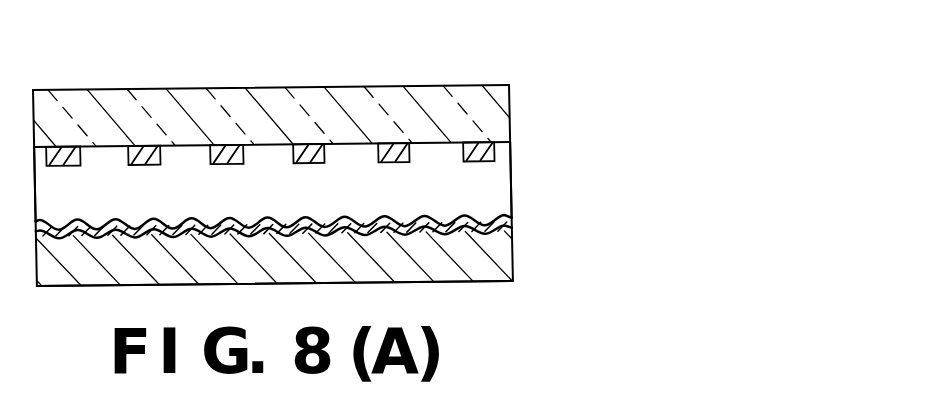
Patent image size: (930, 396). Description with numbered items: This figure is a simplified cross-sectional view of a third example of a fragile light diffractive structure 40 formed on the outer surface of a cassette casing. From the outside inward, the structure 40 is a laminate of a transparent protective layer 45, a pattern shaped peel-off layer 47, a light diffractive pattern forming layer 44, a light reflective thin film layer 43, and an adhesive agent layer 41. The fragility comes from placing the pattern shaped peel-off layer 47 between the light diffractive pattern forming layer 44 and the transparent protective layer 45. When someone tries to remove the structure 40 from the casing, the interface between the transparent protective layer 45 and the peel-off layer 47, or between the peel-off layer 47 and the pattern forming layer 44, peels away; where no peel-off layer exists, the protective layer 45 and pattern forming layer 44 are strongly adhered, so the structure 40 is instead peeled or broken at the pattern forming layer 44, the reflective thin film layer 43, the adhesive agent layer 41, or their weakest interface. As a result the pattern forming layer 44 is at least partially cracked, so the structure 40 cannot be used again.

The fragile light diffractive structure 40 is at (447, 66).
The adhesive agent layer 41 is at (500, 258).
The light reflective thin film layer 43 is at (500, 225).
The light diffractive pattern forming layer 44 is at (497, 186).
The transparent protective layer 45 is at (497, 122).
The pattern shaped peel-off layer 47 is at (492, 153).